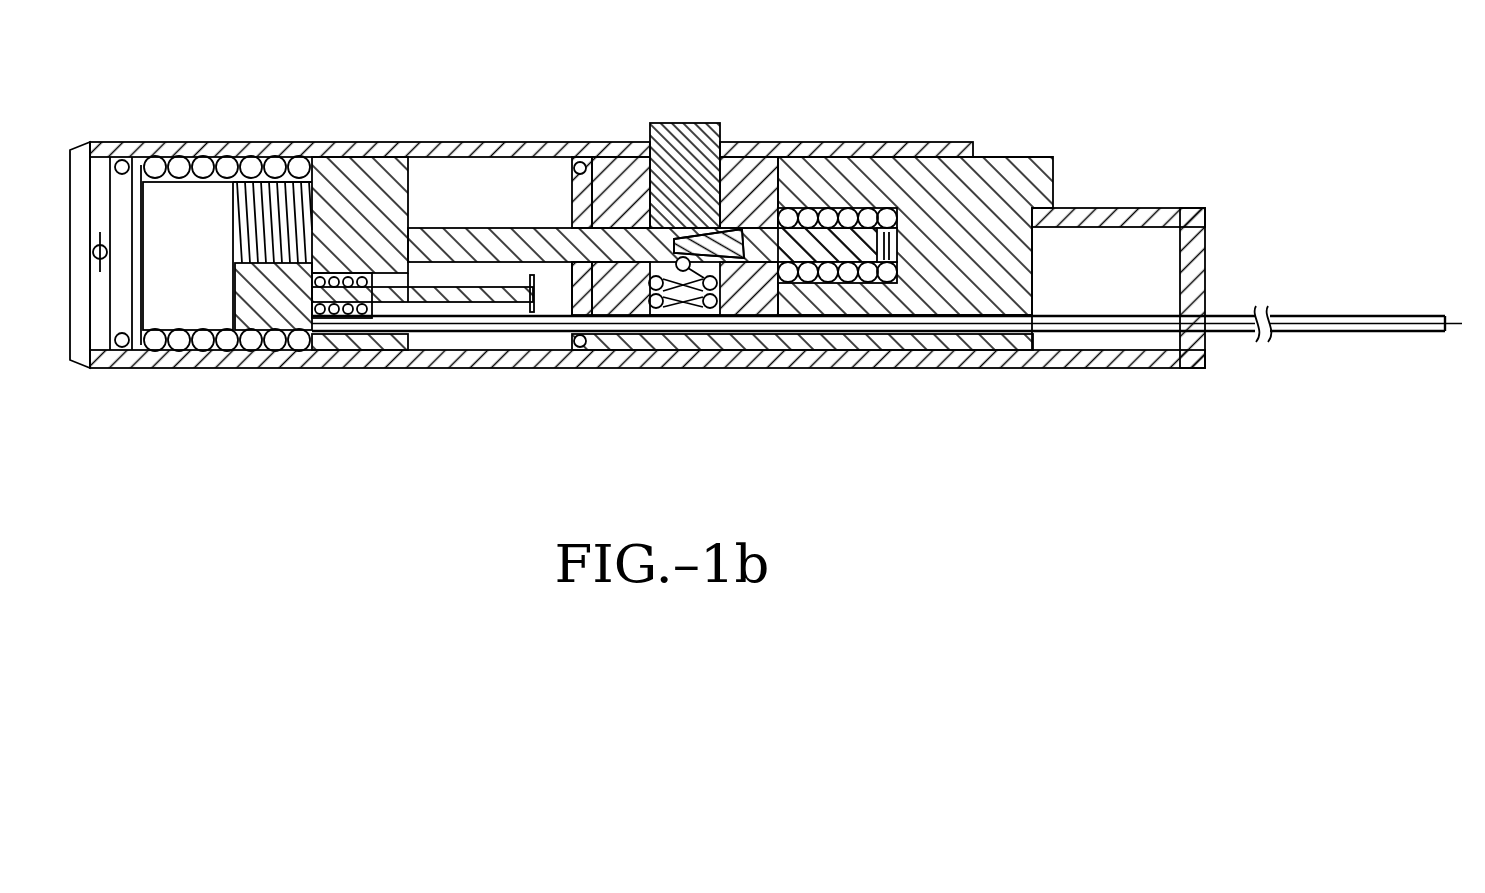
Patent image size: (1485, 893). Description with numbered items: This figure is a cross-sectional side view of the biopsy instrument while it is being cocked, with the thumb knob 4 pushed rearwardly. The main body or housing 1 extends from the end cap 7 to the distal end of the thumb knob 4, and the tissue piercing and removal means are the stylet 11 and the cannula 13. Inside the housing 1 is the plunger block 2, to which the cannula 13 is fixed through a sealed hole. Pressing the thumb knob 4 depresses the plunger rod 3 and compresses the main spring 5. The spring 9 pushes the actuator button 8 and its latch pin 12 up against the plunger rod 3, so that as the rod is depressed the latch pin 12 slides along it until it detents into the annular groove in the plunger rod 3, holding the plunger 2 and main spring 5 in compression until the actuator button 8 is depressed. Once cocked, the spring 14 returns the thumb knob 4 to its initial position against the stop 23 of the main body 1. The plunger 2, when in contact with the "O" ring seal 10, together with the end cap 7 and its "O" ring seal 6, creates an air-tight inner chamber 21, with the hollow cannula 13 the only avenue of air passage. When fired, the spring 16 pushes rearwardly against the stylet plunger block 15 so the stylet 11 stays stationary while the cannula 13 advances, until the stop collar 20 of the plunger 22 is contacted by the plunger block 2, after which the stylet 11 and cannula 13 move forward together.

The main body or housing 1 is at (1065, 355).
The plunger block 2 is at (425, 150).
The plunger rod 3 is at (834, 205).
The thumb knob 4 is at (1053, 157).
The main spring 5 is at (318, 170).
The "O" ring seal 6 is at (125, 160).
The end cap 7 is at (205, 205).
The actuator button 8 is at (713, 132).
The spring 9 is at (676, 306).
The "O" ring seal 10 is at (590, 160).
The stylet 11 is at (560, 305).
The latch pin 12 is at (738, 292).
The cannula 13 is at (1354, 316).
The spring 14 is at (870, 212).
The stylet plunger block 15 is at (240, 332).
The spring 16 is at (340, 320).
The stop collar 20 is at (562, 320).
The inner chamber 21 is at (505, 172).
The plunger 22 is at (463, 290).
The stop 23 is at (1207, 241).